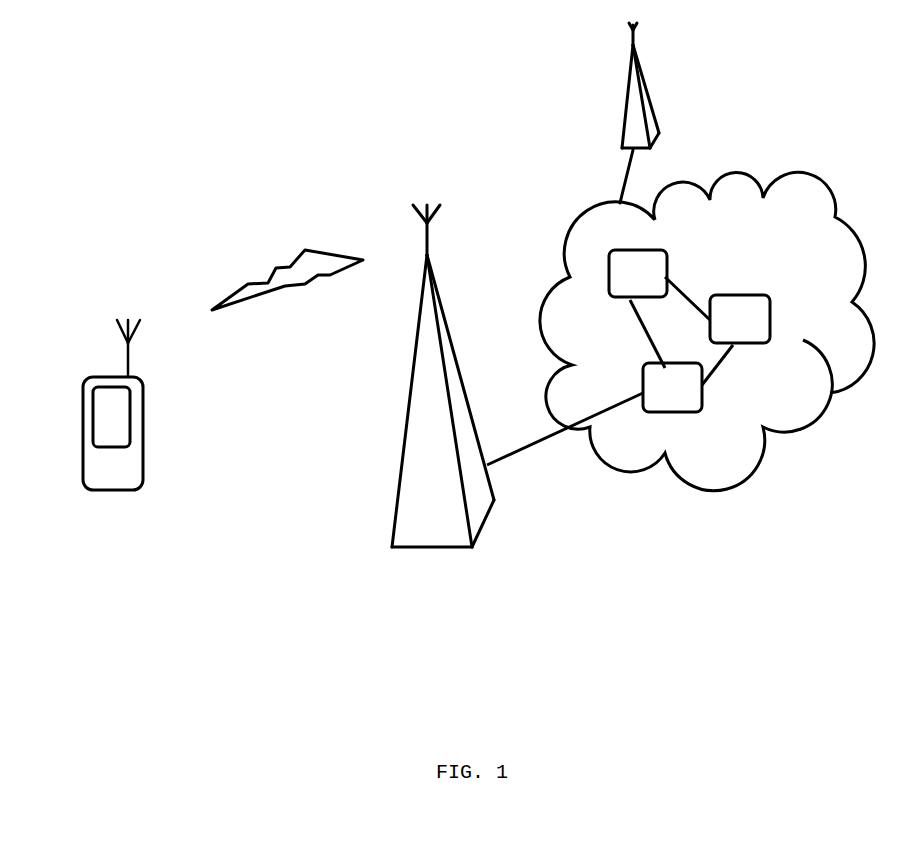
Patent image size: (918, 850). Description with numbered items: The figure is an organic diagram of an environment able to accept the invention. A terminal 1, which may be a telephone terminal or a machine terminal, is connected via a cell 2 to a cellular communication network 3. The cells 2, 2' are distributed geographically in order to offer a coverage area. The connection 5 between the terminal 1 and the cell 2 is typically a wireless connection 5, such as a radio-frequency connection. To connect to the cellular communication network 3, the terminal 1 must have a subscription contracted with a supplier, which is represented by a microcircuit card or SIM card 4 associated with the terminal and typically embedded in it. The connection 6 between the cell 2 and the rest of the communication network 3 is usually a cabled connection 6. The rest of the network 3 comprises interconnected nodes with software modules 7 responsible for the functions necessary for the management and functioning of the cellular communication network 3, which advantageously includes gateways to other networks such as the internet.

The terminal 1 is at (77, 433).
The cell 2 is at (414, 403).
The cell 2' is at (588, 113).
The cellular communication network 3 is at (707, 358).
The SIM card 4 is at (158, 414).
The wireless connection 5 is at (287, 295).
The cabled connection 6 is at (565, 452).
The software modules 7 is at (627, 308).